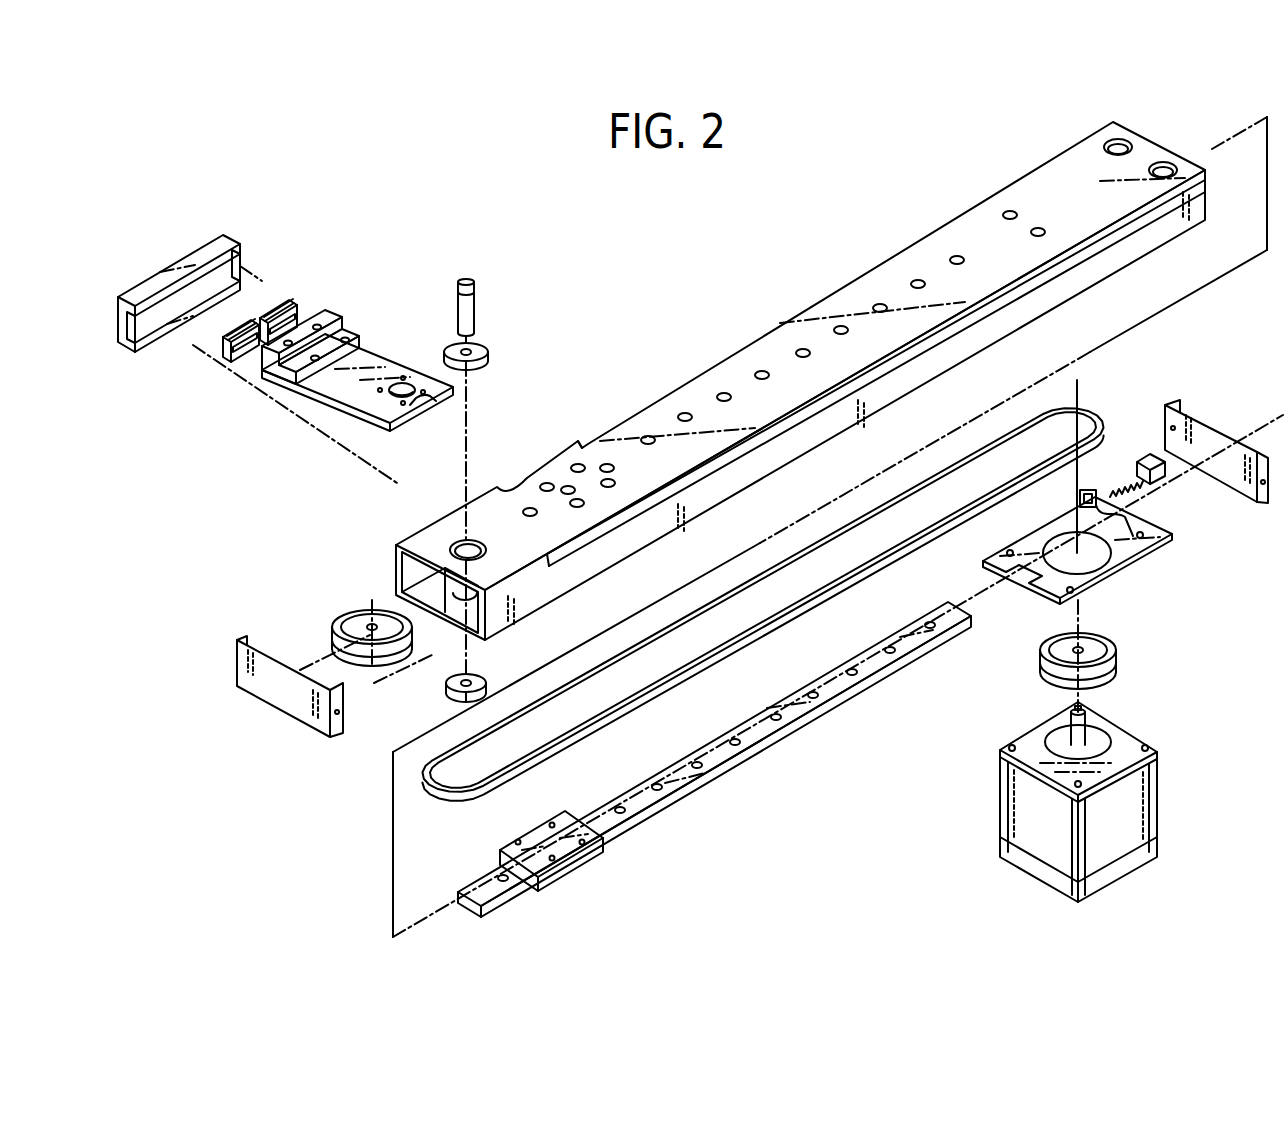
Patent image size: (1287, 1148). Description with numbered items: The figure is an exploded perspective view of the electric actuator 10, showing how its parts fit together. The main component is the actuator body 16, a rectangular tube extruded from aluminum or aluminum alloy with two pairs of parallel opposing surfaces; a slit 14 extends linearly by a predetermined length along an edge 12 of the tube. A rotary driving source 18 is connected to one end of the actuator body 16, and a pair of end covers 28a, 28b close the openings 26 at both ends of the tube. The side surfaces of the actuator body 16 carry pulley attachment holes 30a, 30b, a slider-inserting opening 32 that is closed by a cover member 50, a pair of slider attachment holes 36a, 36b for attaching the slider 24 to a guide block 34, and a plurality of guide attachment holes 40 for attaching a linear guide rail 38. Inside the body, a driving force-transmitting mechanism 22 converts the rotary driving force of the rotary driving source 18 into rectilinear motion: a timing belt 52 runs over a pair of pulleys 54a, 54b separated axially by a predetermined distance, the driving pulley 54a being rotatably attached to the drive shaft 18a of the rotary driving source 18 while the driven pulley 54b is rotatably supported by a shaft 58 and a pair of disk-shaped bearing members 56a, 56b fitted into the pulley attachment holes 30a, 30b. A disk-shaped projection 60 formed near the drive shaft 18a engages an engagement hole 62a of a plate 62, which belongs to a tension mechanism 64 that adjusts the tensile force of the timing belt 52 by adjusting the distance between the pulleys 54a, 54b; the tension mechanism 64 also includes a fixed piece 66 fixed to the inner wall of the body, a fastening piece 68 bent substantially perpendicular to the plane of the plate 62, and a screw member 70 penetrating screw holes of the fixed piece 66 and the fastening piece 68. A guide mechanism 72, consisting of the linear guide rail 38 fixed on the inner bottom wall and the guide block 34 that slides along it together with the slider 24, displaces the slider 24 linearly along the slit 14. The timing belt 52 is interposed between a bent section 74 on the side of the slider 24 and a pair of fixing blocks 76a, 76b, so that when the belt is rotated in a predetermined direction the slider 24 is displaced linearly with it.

The electric actuator 10 is at (597, 213).
The edge 12 is at (1040, 300).
The slit 14 is at (905, 357).
The actuator body 16 is at (830, 282).
The rotary driving source 18 is at (1160, 795).
The drive shaft 18a is at (1084, 730).
The driving force-transmitting mechanism 22 is at (860, 574).
The slider 24 is at (375, 355).
The openings 26 is at (465, 612).
The end cover 28a is at (273, 694).
The end cover 28b is at (1215, 442).
The pulley attachment hole 30a is at (460, 535).
The pulley attachment hole 30b is at (420, 553).
The slider-inserting opening 32 is at (578, 436).
The guide block 34 is at (555, 848).
The slider attachment hole 36a is at (540, 510).
The slider attachment hole 36b is at (648, 434).
The linear guide rail 38 is at (812, 686).
The guide attachment holes 40 is at (722, 394).
The cover member 50 is at (160, 282).
The timing belt 52 is at (752, 647).
The driving pulley 54a is at (1114, 653).
The driven pulley 54b is at (334, 614).
The bearing member 56a is at (488, 352).
The bearing member 56b is at (450, 697).
The shaft 58 is at (476, 306).
The disk-shaped projection 60 is at (1056, 742).
The plate 62 is at (1105, 578).
The engagement hole 62a is at (1060, 565).
The tension mechanism 64 is at (1124, 464).
The fixed piece 66 is at (1148, 456).
The fastening piece 68 is at (1087, 488).
The screw member 70 is at (1140, 478).
The guide mechanism 72 is at (749, 765).
The bent section 74 is at (270, 372).
The fixing block 76a is at (228, 327).
The fixing block 76b is at (270, 298).